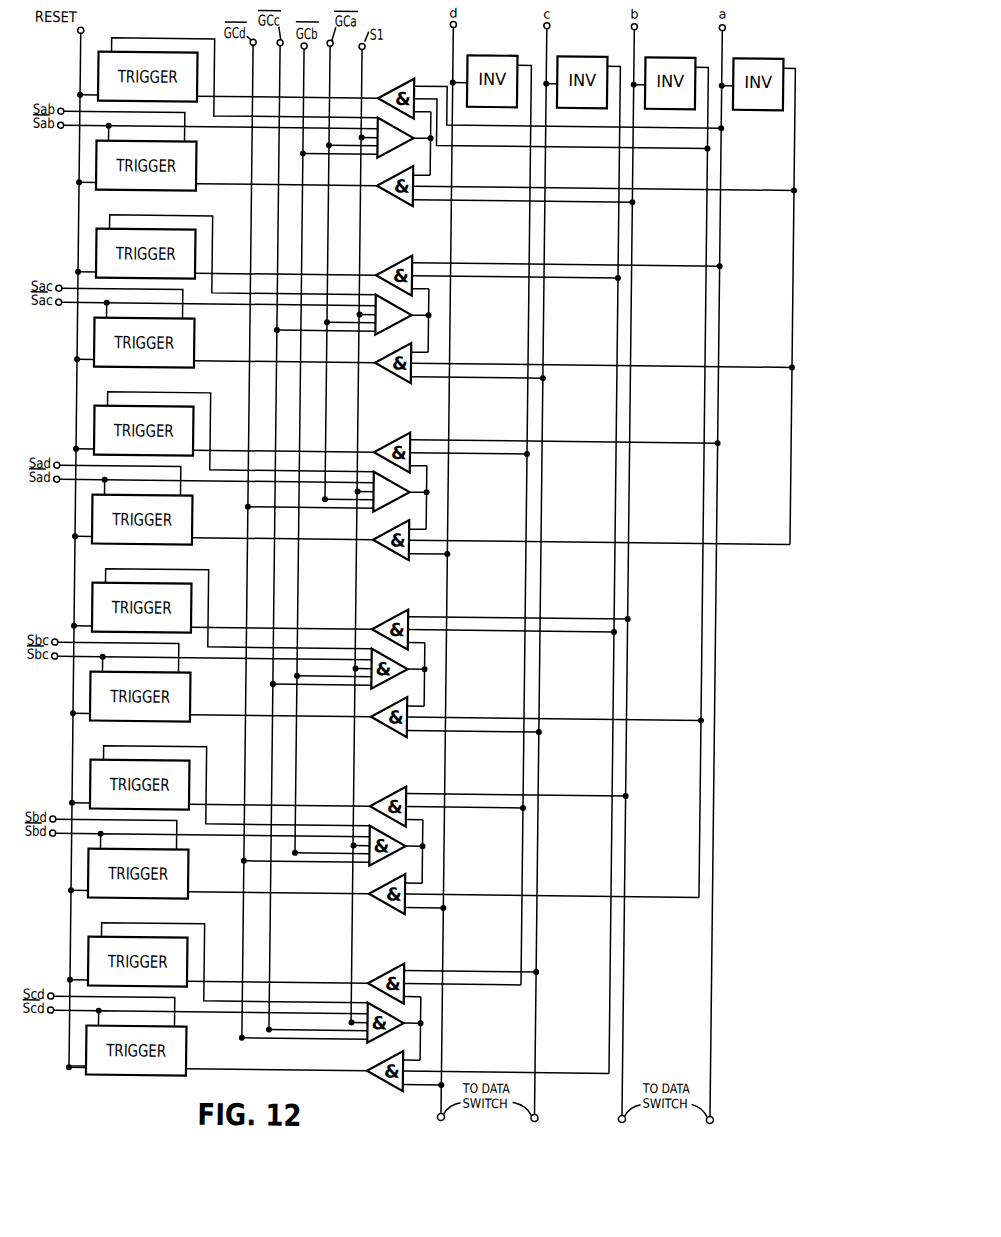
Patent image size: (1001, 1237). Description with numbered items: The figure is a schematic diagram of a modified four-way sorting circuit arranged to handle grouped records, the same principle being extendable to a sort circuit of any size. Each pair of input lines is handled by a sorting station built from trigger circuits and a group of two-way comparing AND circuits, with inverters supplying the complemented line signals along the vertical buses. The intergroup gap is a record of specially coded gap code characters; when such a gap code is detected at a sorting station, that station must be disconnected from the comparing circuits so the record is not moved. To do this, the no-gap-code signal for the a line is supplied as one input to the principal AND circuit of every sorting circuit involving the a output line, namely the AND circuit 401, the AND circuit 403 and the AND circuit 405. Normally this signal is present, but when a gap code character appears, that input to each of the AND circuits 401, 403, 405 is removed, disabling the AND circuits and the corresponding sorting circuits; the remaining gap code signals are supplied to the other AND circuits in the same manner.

The AND circuit 401 is at (397, 148).
The AND circuit 403 is at (400, 317).
The AND circuit 405 is at (398, 494).